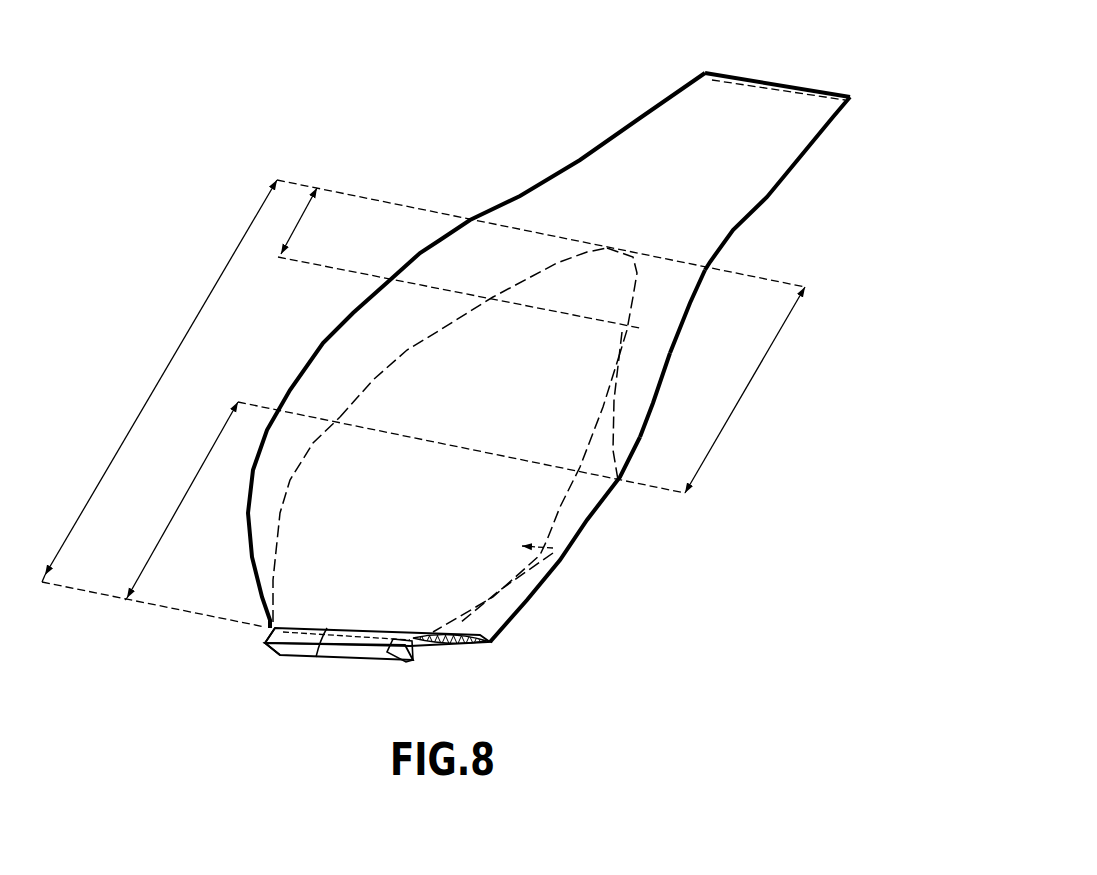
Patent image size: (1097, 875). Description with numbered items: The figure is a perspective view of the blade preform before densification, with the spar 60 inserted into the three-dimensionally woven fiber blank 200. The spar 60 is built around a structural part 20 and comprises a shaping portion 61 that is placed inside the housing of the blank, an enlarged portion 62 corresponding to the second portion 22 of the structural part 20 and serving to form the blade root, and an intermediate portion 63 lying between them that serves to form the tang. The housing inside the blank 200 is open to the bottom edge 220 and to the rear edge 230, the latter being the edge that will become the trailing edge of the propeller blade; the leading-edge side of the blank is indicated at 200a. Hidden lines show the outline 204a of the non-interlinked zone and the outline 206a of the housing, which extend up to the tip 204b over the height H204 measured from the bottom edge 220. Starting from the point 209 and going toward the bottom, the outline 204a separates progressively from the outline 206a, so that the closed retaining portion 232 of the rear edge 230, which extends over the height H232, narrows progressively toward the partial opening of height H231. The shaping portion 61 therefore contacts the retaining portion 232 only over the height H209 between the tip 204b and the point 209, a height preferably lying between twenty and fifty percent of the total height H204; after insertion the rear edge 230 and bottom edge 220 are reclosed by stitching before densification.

The fiber blank 200 is at (442, 202).
The leading edge of blade 200a is at (310, 363).
The outline of the non-interlinked zone 204a is at (440, 323).
The tip of the non-interlinked zone 204b is at (618, 247).
The outline of the housing 206a is at (592, 440).
The point 209 is at (640, 328).
The rear edge 230 is at (687, 310).
The retaining portion 232 is at (652, 407).
The structural part 20 is at (559, 567).
The shaping portion 61 is at (302, 562).
The spar 60 is at (278, 660).
The second portion of the structural part 22 is at (265, 643).
The bottom edge 220 is at (316, 657).
The enlarged portion 62 is at (403, 655).
The portion between the shaping portion and the enlarged portion 63 is at (413, 643).
The height of the non-interlinked zone H204 is at (166, 370).
The height of the contact zone H209 is at (297, 220).
The height of the partial opening H231 is at (180, 505).
The height of the retaining portion H232 is at (748, 393).